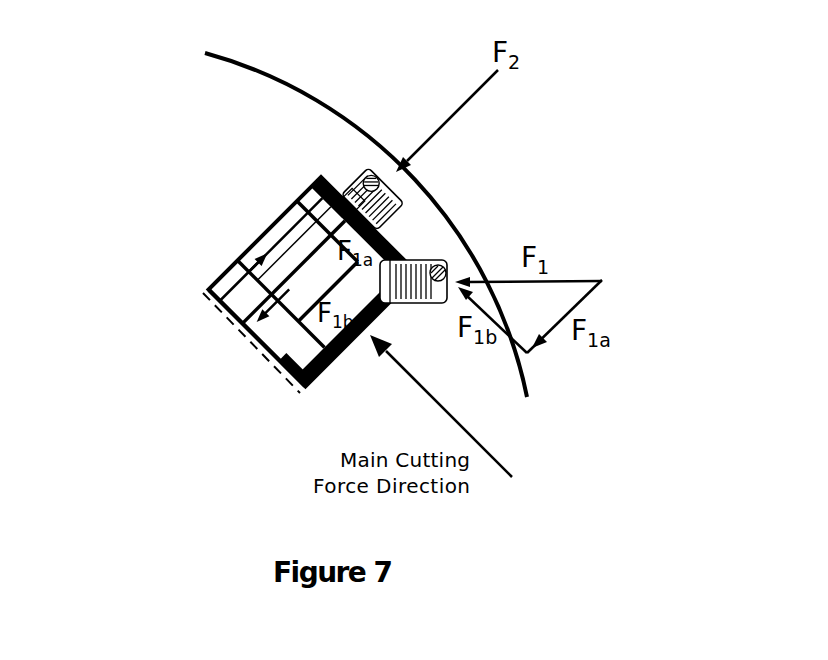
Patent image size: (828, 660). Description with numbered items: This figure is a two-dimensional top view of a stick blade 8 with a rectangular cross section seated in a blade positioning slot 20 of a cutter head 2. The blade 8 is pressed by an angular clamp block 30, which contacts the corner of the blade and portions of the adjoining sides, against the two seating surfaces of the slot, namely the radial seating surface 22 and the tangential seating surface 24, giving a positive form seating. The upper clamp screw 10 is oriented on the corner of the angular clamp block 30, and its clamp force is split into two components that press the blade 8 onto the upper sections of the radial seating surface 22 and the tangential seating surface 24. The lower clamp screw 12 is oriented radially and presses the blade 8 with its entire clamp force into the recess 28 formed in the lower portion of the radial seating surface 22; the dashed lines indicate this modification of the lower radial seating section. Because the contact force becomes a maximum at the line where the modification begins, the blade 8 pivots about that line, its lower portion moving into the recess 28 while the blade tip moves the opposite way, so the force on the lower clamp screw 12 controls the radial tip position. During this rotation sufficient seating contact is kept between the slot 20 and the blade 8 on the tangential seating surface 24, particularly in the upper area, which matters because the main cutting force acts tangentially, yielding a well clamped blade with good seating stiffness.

The cutter head 2 is at (223, 82).
The stick blade 8 is at (247, 273).
The upper clamp screw 10 is at (420, 303).
The lower clamp screw 12 is at (354, 183).
The blade positioning slot 20 is at (313, 170).
The radial seating surface 22 is at (225, 307).
The tangential seating surface 24 is at (277, 227).
The recess 28 is at (260, 342).
The angular clamp block 30 is at (310, 212).